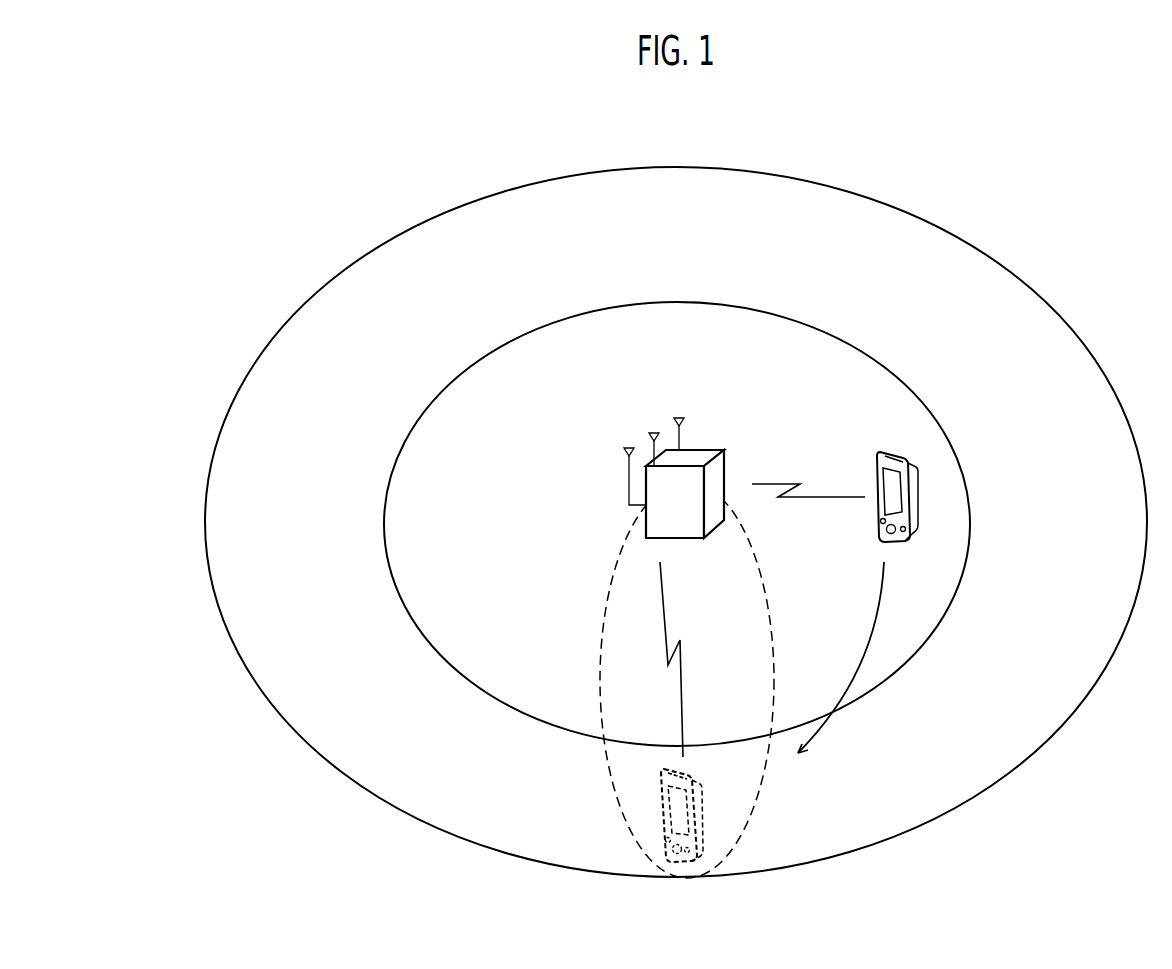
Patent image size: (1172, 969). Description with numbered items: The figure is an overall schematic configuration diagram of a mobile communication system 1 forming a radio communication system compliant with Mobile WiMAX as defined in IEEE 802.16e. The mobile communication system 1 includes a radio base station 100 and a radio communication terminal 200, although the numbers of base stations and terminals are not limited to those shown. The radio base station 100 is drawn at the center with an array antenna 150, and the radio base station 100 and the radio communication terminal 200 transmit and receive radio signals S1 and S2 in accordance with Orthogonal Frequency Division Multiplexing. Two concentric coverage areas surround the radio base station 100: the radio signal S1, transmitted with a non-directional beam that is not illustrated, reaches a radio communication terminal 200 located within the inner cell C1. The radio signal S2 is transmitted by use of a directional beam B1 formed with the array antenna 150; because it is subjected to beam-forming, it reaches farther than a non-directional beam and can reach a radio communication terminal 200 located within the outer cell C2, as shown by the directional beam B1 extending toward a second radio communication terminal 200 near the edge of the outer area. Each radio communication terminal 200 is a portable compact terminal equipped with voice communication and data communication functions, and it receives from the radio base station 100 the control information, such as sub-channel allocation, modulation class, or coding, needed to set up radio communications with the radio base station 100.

The mobile communication system 1 is at (829, 175).
The radio base station 100 is at (712, 450).
The array antenna 150 is at (630, 447).
The radio communication terminal 200 is at (885, 450).
The cell C1 is at (824, 332).
The cell C2 is at (1027, 285).
The directional beam B1 is at (772, 782).
The radio signal S1 is at (825, 497).
The radio signal S2 is at (685, 676).